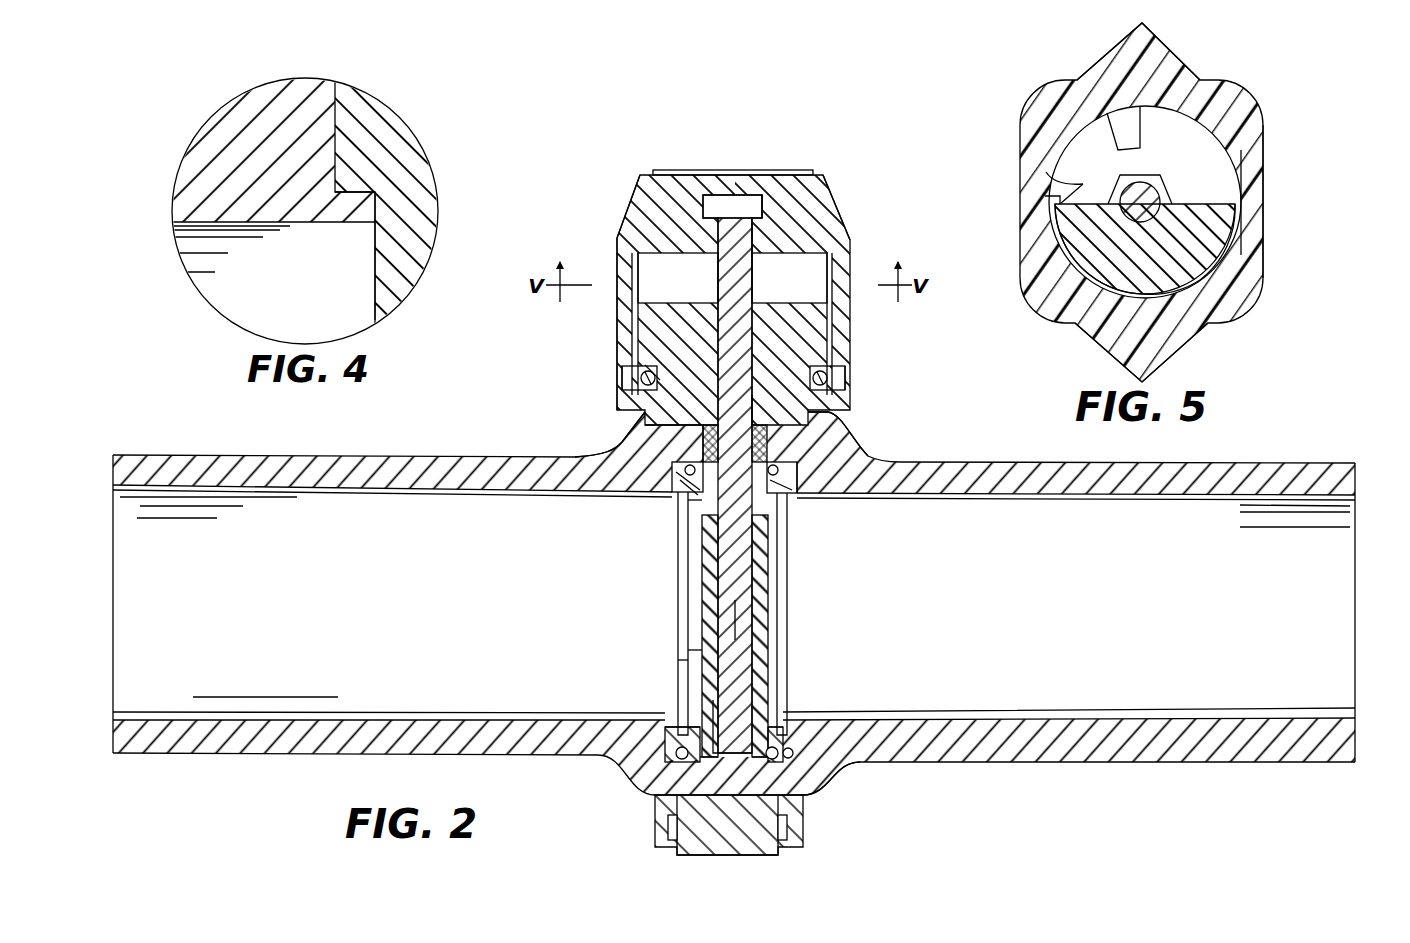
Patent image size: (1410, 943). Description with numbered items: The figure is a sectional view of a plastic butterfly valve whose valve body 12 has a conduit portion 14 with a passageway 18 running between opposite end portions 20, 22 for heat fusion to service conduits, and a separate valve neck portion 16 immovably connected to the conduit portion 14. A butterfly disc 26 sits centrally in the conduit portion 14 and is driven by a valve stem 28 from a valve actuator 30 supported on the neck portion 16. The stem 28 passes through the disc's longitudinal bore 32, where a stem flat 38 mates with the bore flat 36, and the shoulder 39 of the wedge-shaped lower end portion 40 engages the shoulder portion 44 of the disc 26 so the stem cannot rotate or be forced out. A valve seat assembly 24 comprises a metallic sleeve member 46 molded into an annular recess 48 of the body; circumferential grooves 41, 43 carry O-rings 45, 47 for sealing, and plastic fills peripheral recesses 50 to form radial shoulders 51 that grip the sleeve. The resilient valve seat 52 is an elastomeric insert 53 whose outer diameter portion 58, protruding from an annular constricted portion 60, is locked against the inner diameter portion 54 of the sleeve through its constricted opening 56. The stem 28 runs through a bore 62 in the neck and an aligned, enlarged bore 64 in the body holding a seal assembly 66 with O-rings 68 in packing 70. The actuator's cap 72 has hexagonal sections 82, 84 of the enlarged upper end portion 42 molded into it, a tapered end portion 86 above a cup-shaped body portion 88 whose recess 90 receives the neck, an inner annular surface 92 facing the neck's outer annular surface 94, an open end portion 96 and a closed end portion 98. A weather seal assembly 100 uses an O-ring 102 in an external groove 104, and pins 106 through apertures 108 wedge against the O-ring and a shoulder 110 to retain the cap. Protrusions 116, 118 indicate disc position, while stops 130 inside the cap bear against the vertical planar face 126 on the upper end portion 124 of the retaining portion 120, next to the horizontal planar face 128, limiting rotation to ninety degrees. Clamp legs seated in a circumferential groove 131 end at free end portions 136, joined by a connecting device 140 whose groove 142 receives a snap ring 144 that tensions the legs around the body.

In FIG. 2, the valve body 12 is at (566, 443).
In FIG. 4, the valve body 12 is at (294, 229).
In FIG. 2, the conduit portion 14 is at (374, 454).
In FIG. 2, the valve neck portion 16 is at (644, 413).
In FIG. 5, the valve neck portion 16 is at (1063, 256).
In FIG. 2, the passageway 18 is at (384, 578).
In FIG. 4, the passageway 18 is at (296, 323).
In FIG. 2, the end portion 20 is at (150, 493).
In FIG. 2, the end portion 22 is at (1312, 502).
In FIG. 2, the valve seat assembly 24 is at (689, 527).
In FIG. 2, the butterfly disc 26 is at (778, 594).
In FIG. 2, the valve stem 28 is at (738, 623).
In FIG. 5, the valve stem 28 is at (1148, 196).
In FIG. 2, the valve actuator 30 is at (630, 174).
In FIG. 5, the valve actuator 30 is at (1270, 122).
In FIG. 2, the longitudinal bore 32 is at (762, 592).
In FIG. 2, the flat 36 is at (712, 592).
In FIG. 2, the flat 38 is at (758, 641).
In FIG. 2, the shoulder 39 is at (680, 668).
In FIG. 2, the wedge-shaped lower end portion 40 is at (732, 726).
In FIG. 2, the circumferential groove 41 is at (675, 752).
In FIG. 2, the hexagonal-shaped enlarged upper end portion 42 is at (745, 200).
In FIG. 5, the hexagonal-shaped enlarged upper end portion 42 is at (1144, 176).
In FIG. 2, the circumferential groove 43 is at (795, 742).
In FIG. 2, the shoulder portion 44 is at (696, 663).
In FIG. 2, the O-ring 45 is at (684, 472).
In FIG. 2, the metallic sleeve member 46 is at (676, 503).
In FIG. 4, the metallic sleeve member 46 is at (385, 116).
In FIG. 2, the O-ring 47 is at (780, 471).
In FIG. 2, the annular recess 48 is at (662, 741).
In FIG. 2, the peripheral recesses 50 is at (796, 497).
In FIG. 4, the peripheral recesses 50 is at (356, 191).
In FIG. 2, the radial shoulders 51 is at (674, 724).
In FIG. 4, the radial shoulders 51 is at (352, 216).
In FIG. 2, the valve seat 52 is at (782, 702).
In FIG. 2, the elastomeric insert 53 is at (776, 522).
In FIG. 2, the inner diameter portion 54 is at (756, 761).
In FIG. 2, the constricted opening 56 is at (715, 761).
In FIG. 2, the outer diameter portion 58 is at (791, 480).
In FIG. 2, the annular constricted portion 60 is at (690, 509).
In FIG. 2, the bore 62 is at (773, 404).
In FIG. 2, the bore 64 is at (796, 440).
In FIG. 2, the seal assembly 66 is at (700, 462).
In FIG. 2, the O-rings 68 is at (768, 433).
In FIG. 2, the packing 70 is at (701, 447).
In FIG. 2, the cap 72 is at (710, 170).
In FIG. 5, the cap 72 is at (1266, 164).
In FIG. 2, the hexagonal section 82 is at (767, 202).
In FIG. 2, the hexagonal section 84 is at (766, 231).
In FIG. 2, the tapered end portion 86 is at (640, 195).
In FIG. 2, the cup-shaped body portion 88 is at (628, 292).
In FIG. 5, the cup-shaped body portion 88 is at (1258, 214).
In FIG. 2, the recess 90 is at (640, 250).
In FIG. 5, the inner annular surface 92 is at (1242, 242).
In FIG. 2, the outer annular surface 94 is at (832, 322).
In FIG. 5, the outer annular surface 94 is at (1196, 282).
In FIG. 2, the open end portion 96 is at (846, 381).
In FIG. 2, the closed end portion 98 is at (678, 278).
In FIG. 5, the closed end portion 98 is at (1222, 186).
In FIG. 2, the weather seal assembly 100 is at (626, 379).
In FIG. 2, the O-ring 102 is at (658, 379).
In FIG. 2, the external groove 104 is at (810, 377).
In FIG. 2, the pins 106 is at (836, 360).
In FIG. 2, the apertures 108 is at (632, 358).
In FIG. 2, the shoulder 110 is at (645, 365).
In FIG. 5, the protrusion 116 is at (1118, 56).
In FIG. 5, the protrusion 118 is at (1118, 339).
In FIG. 5, the valve actuator and stem retaining portion 120 is at (1053, 237).
In FIG. 2, the upper end portion 124 is at (650, 270).
In FIG. 5, the upper end portion 124 is at (1222, 262).
In FIG. 2, the vertical planar face 126 is at (818, 262).
In FIG. 5, the vertical planar face 126 is at (1095, 199).
In FIG. 2, the horizontal planar face 128 is at (790, 302).
In FIG. 5, the stops 130 is at (1050, 170).
In FIG. 2, the circumferential groove 131 is at (822, 800).
In FIG. 2, the free end portion 136 is at (760, 853).
In FIG. 2, the connecting device 140 is at (822, 830).
In FIG. 2, the groove 142 is at (688, 832).
In FIG. 2, the snap ring 144 is at (655, 829).